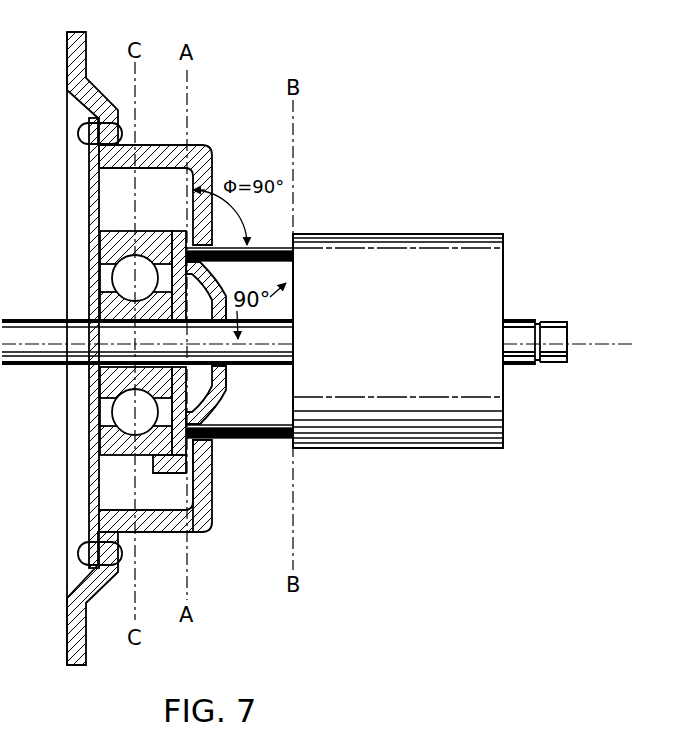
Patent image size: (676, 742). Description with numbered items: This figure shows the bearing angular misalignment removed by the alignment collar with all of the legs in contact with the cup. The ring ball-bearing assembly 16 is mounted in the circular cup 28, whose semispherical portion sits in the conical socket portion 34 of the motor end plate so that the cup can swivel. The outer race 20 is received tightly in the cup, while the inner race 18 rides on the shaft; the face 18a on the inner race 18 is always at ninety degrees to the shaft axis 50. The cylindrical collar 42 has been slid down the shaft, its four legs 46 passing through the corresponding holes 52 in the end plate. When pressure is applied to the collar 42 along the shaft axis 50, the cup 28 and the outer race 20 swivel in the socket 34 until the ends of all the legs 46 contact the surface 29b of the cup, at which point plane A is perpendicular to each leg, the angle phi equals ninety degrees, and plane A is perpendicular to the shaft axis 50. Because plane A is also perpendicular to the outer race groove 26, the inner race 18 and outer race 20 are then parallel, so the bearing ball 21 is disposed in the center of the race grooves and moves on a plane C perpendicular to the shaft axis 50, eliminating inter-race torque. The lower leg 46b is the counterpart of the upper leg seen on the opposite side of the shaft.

The ring ball-bearing assembly 16 is at (100, 358).
The inner race 18 is at (317, 331).
The face on inner race 18a is at (228, 373).
The outer race 20 is at (112, 245).
The bearing ball 21 is at (117, 285).
The outer race groove 26 is at (128, 231).
The circular cup 28 is at (178, 477).
The surface 29b is at (203, 467).
The conical socket portion 34 is at (223, 402).
The cylindrical collar 42 is at (399, 233).
The legs 46 is at (240, 246).
The lower sleeve 46b is at (197, 441).
The shaft axis 50 is at (583, 339).
The holes 52 is at (213, 261).